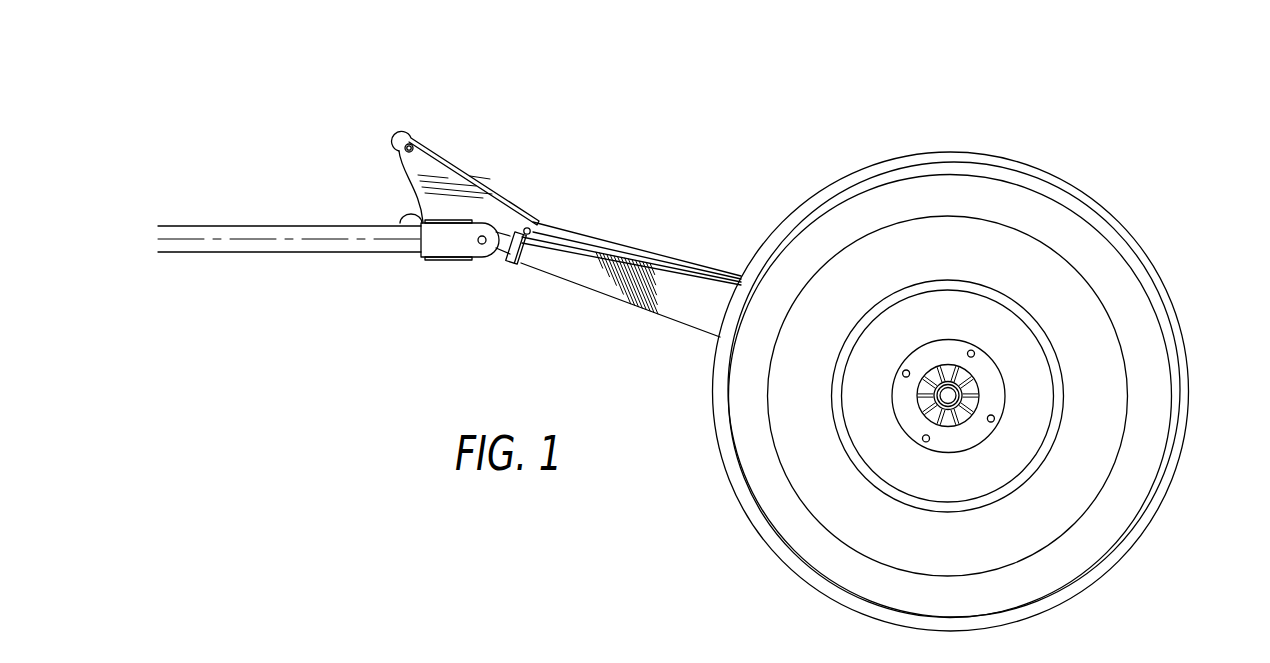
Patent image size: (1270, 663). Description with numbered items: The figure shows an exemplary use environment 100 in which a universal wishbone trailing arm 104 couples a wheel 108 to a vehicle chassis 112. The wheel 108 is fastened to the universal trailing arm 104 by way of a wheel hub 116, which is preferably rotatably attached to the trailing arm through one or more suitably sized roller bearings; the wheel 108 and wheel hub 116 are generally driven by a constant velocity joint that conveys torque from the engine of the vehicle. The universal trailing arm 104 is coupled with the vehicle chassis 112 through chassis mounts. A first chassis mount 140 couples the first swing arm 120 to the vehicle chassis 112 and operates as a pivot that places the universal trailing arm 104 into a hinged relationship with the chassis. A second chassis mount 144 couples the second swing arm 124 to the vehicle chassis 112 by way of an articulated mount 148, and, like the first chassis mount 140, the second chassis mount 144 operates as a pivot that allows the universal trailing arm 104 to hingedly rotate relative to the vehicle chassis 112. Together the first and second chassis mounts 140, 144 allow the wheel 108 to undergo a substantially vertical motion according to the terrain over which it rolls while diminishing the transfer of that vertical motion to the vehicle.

The use environment 100 is at (1050, 78).
The universal wishbone trailing arm 104 is at (688, 340).
The wheel 108 is at (1095, 199).
The vehicle chassis 112 is at (235, 226).
The wheel hub 116 is at (963, 413).
The first swing arm 120 is at (578, 272).
The second swing arm 124 is at (627, 243).
The first chassis mount 140 is at (481, 257).
The second chassis mount 144 is at (533, 216).
The articulated mount 148 is at (441, 157).